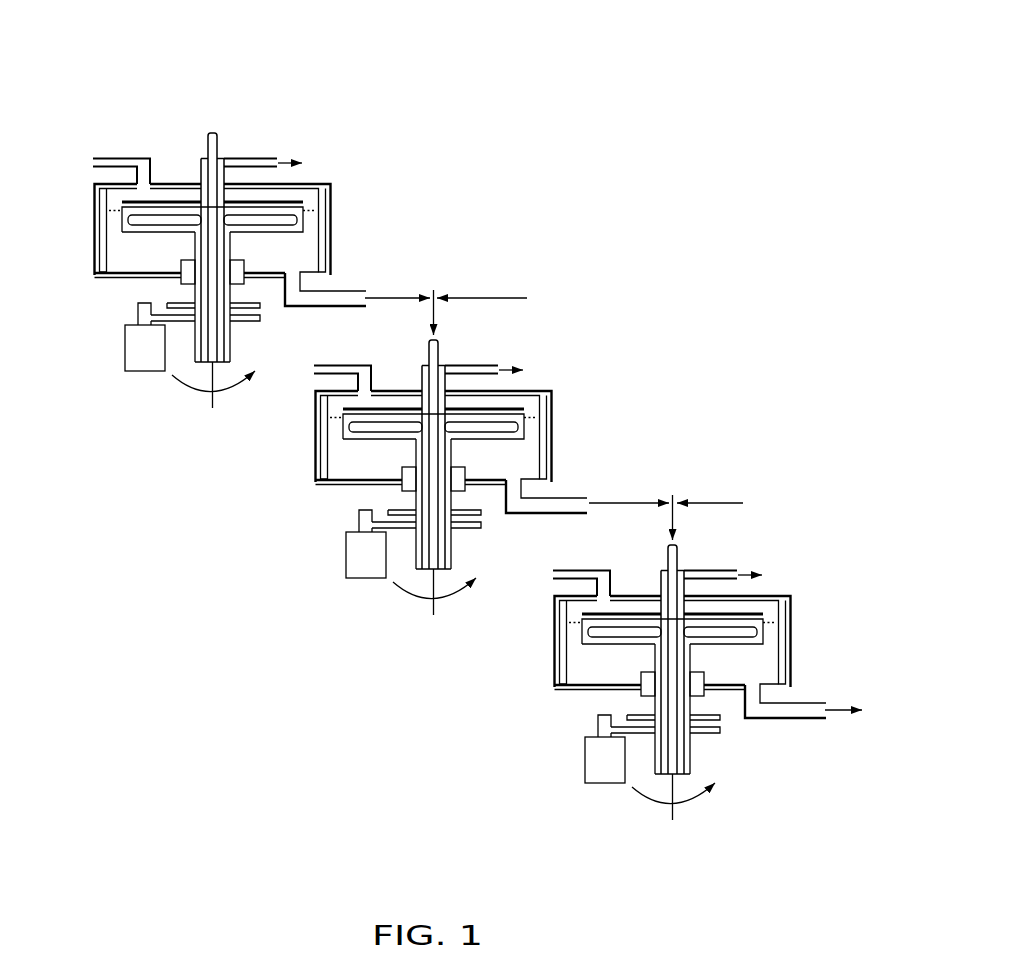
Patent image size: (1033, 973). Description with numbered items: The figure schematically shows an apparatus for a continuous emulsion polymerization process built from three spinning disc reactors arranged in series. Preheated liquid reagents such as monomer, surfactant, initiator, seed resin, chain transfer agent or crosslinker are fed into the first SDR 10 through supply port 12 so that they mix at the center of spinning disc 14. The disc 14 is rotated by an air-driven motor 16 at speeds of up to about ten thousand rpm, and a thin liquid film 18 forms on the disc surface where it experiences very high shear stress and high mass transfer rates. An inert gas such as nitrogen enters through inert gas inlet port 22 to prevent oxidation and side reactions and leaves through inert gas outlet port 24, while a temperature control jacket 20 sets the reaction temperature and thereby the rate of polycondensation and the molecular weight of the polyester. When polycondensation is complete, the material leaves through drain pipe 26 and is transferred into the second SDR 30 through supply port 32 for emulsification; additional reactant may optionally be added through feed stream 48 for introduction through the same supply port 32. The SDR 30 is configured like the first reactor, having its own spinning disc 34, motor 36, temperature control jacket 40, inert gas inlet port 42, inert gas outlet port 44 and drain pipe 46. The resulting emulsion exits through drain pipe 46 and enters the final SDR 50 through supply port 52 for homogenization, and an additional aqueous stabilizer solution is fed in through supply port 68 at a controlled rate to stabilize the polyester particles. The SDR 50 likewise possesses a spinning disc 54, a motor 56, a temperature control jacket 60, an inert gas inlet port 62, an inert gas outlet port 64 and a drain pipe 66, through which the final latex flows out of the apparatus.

The SDR 10 is at (104, 92).
The supply port 12 is at (212, 128).
The spinning disc 14 is at (138, 228).
The air-driven motor 16 is at (135, 372).
The thin liquid film 18 is at (298, 202).
The temperature control jacket 20 is at (92, 202).
The inert gas inlet port 22 is at (90, 163).
The inert gas outlet port 24 is at (280, 162).
The drain pipe 26 is at (318, 307).
The SDR 30 is at (617, 243).
The supply port 32 is at (399, 299).
The spinning disc 34 is at (405, 514).
The motor 36 is at (407, 575).
The temperature control jacket 40 is at (395, 441).
The inert gas inlet port 42 is at (322, 353).
The inert gas outlet port 44 is at (486, 341).
The drain pipe 46 is at (537, 527).
The feed stream 48 is at (482, 267).
The SDR 50 is at (503, 790).
The supply port 52 is at (631, 504).
The spinning disc 54 is at (644, 719).
The motor 56 is at (646, 781).
The temperature control jacket 60 is at (634, 646).
The inert gas inlet port 62 is at (562, 559).
The inert gas outlet port 64 is at (724, 546).
The drain pipe 66 is at (803, 732).
The supply port 68 is at (713, 473).